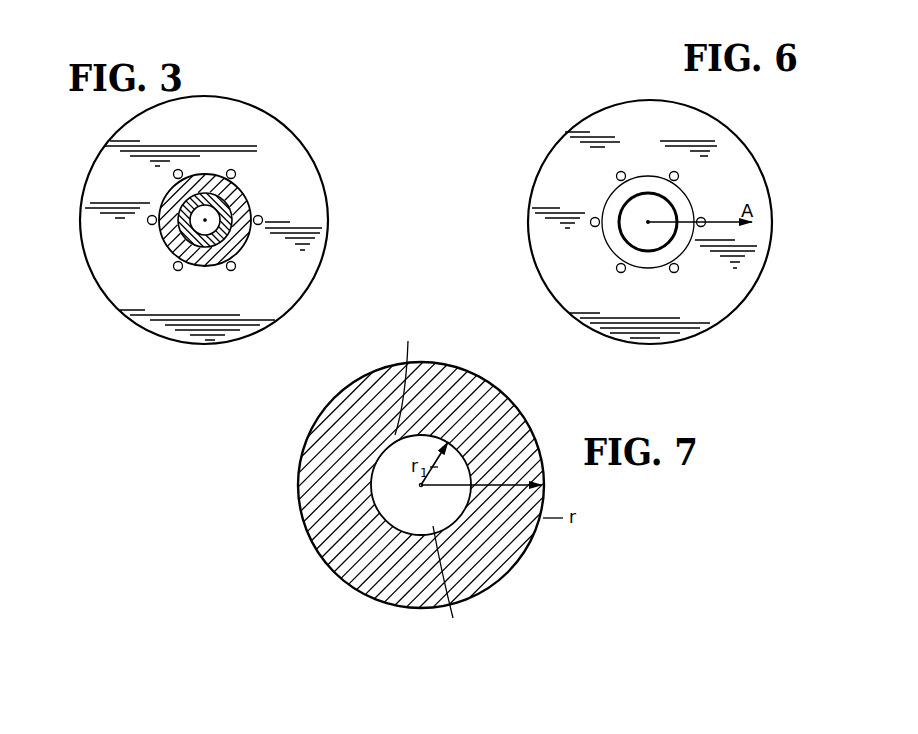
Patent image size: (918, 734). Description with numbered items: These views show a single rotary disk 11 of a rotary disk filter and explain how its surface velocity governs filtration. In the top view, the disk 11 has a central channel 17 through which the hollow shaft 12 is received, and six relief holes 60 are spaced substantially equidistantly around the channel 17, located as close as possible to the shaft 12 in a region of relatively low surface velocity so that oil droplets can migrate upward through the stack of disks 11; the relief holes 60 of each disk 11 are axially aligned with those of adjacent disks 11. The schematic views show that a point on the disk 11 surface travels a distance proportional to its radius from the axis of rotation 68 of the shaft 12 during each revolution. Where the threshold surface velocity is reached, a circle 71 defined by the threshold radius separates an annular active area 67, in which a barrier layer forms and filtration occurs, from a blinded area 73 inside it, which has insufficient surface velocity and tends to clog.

In FIG. 3, the rotary disk 11 is at (296, 288).
In FIG. 6, the rotary disk 11 is at (740, 304).
In FIG. 7, the rotary disk 11 is at (490, 413).
In FIG. 3, the hollow shaft 12 is at (207, 266).
In FIG. 3, the channel 17 is at (210, 221).
In FIG. 3, the relief holes 60 is at (235, 171).
In FIG. 6, the relief holes 60 is at (705, 219).
In FIG. 7, the active area 67 is at (504, 578).
In FIG. 6, the axis of rotation 68 is at (648, 221).
In FIG. 7, the axis of rotation 68 is at (421, 488).
In FIG. 7, the circle 71 is at (409, 378).
In FIG. 7, the blinded area 73 is at (448, 585).